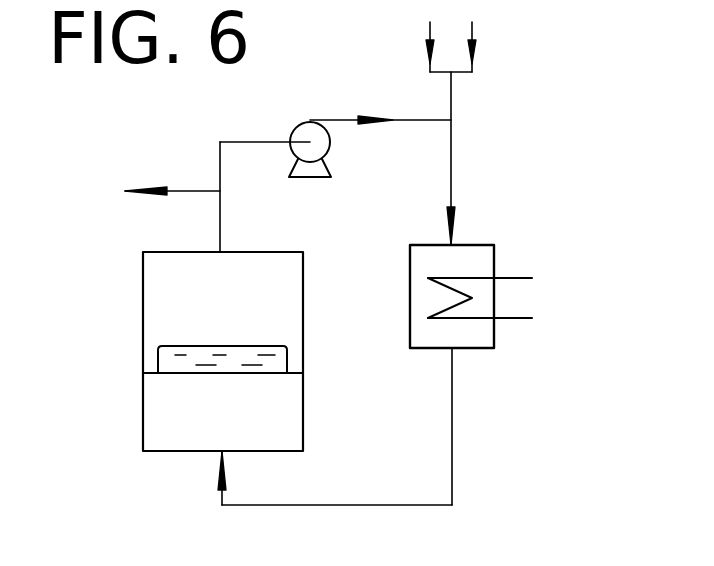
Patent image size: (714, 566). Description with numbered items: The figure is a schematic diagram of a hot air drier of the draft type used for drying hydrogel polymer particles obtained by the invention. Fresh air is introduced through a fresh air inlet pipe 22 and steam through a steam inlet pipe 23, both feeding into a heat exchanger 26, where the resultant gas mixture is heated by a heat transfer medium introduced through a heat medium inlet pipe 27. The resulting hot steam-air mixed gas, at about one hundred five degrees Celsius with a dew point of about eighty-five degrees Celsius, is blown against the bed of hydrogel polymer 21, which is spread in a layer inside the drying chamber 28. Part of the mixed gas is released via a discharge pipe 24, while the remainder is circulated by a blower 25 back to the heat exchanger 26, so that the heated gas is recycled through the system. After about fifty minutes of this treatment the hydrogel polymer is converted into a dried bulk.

The tray / bath of liquid material 21 is at (282, 362).
The fresh air inlet pipe 22 is at (425, 38).
The steam inlet pipe 23 is at (476, 38).
The discharge pipe 24 is at (190, 188).
The blower 25 is at (310, 130).
The heat exchanger 26 is at (495, 251).
The heat medium inlet pipe 27 is at (522, 320).
The tank / vessel 28 is at (304, 299).